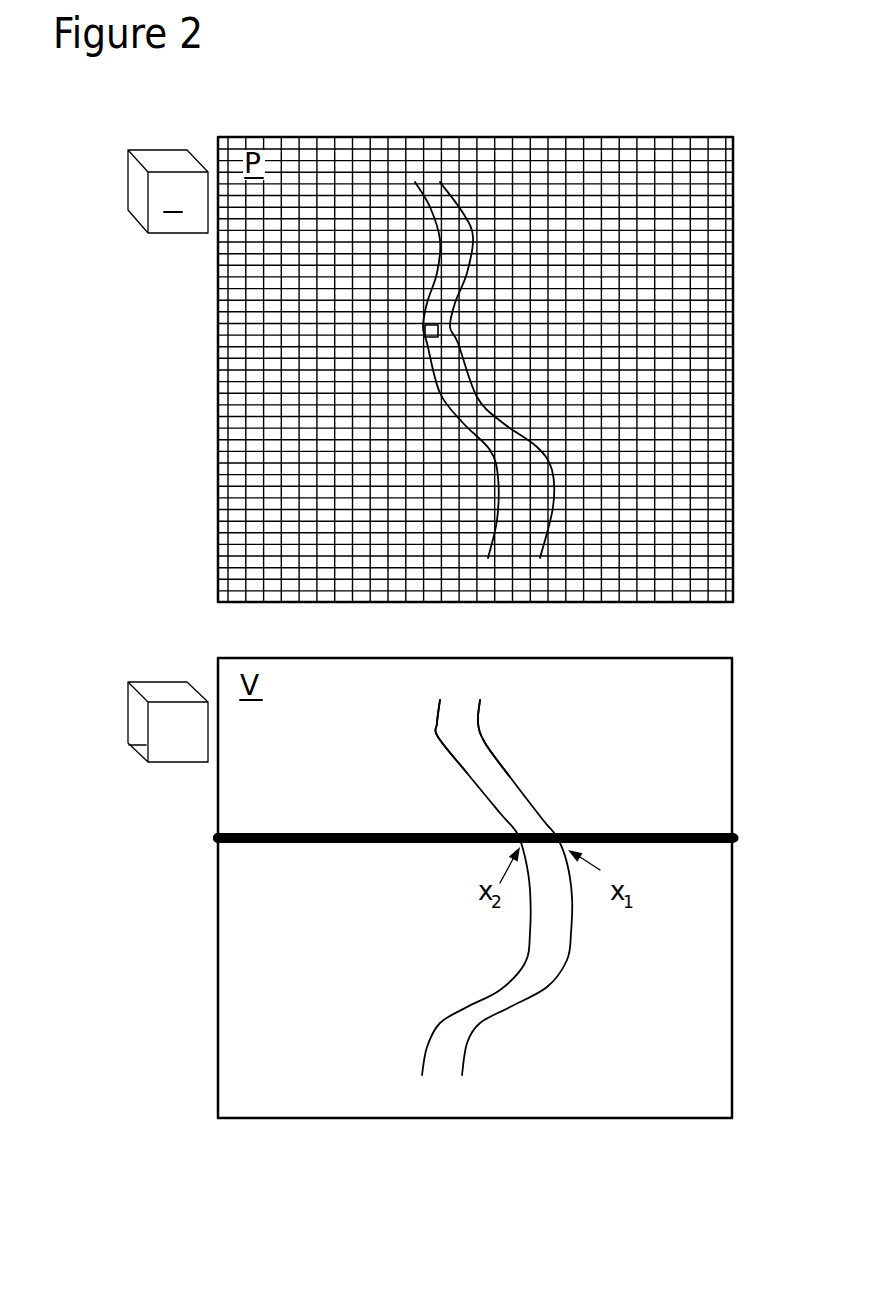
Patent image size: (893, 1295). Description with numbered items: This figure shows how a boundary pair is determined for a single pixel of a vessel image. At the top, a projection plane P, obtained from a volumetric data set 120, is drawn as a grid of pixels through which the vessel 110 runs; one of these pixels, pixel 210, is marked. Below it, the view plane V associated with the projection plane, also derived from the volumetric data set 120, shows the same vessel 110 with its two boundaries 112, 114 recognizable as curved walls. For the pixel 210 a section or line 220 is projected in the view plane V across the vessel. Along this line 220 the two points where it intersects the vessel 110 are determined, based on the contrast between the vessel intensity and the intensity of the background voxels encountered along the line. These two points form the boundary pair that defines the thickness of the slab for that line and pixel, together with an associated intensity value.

The vessel 110 is at (484, 200).
The vessel boundary 112 is at (485, 743).
The vessel boundary 114 is at (438, 740).
The volumetric data set 120 is at (171, 268).
The pixel 210 is at (428, 340).
The line 220 is at (343, 843).